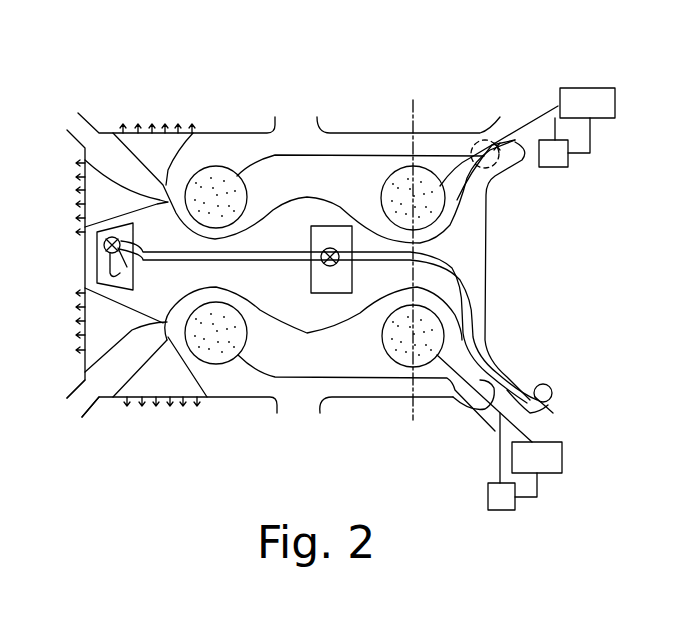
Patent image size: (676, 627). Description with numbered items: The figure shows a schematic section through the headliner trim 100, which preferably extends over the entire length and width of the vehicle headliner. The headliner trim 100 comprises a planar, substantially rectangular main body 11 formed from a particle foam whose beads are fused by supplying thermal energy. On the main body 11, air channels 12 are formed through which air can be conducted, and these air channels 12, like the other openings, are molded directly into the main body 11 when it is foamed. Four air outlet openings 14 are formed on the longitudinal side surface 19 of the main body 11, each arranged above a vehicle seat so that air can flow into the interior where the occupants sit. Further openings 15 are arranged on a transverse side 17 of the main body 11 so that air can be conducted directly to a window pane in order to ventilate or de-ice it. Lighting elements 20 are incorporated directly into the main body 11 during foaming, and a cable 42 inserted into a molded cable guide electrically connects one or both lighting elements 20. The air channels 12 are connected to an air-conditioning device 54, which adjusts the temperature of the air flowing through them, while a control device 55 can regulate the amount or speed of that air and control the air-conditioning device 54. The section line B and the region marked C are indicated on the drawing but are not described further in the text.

The headliner trim 100 is at (136, 82).
The main body 11 is at (70, 412).
The air channels 12 is at (457, 195).
The air outlet openings 14 is at (213, 166).
The openings 15 is at (148, 150).
The transverse side 17 is at (203, 133).
The longitudinal side surface 19 is at (273, 248).
The lighting elements 20 is at (97, 263).
The cable 42 is at (273, 265).
The air-conditioning device 54 is at (593, 90).
The control device 55 is at (562, 167).
The cutting zone C is at (487, 138).
The section line B- B is at (405, 108).